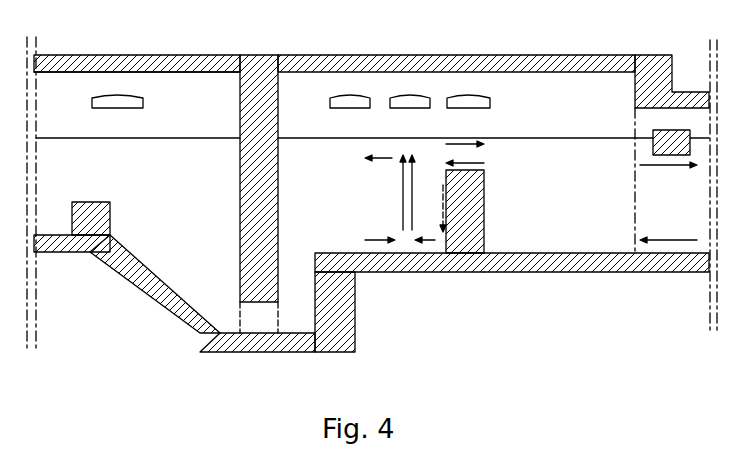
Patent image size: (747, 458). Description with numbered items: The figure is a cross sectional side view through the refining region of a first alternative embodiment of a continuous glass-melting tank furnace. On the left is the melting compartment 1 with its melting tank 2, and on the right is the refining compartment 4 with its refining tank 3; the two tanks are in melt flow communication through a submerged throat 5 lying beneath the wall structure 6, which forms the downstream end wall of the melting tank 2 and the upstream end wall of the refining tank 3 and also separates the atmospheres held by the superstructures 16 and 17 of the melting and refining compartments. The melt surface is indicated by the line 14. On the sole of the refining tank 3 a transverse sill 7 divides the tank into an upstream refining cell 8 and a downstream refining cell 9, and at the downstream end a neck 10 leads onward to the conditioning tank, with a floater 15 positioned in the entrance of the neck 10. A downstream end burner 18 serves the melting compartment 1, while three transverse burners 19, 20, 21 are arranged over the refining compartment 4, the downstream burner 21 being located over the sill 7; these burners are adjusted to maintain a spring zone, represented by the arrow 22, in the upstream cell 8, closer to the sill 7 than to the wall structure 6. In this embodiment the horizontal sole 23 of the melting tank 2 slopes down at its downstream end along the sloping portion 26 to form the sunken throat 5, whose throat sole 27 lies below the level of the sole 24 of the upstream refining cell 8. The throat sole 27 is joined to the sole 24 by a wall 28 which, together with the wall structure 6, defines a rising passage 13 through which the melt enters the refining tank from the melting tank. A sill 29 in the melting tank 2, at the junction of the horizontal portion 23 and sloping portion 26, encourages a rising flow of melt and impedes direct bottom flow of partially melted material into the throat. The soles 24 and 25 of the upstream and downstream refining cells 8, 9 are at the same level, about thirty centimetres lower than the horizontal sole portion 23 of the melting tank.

The melting compartment 1 is at (207, 52).
The melting tank 2 is at (76, 177).
The refining tank 3 is at (465, 153).
The refining compartment 4 is at (574, 55).
The submerged throat 5 is at (266, 327).
The wall structure 6 is at (240, 103).
The transverse sill 7 is at (485, 174).
The upstream refining cell 8 is at (356, 222).
The downstream refining cell 9 is at (560, 222).
The neck 10 is at (688, 222).
The rising passage 13 is at (308, 296).
The melt surface level 14 is at (118, 137).
The floater 15 is at (653, 145).
The superstructure of the melting compartment 16 is at (96, 57).
The superstructure of the refining compartment 17 is at (393, 58).
The downstream end burner 18 is at (106, 102).
The transverse burner 19 is at (348, 101).
The transverse burner 20 is at (408, 102).
The transverse burner 21 is at (467, 103).
The spring zone 22 is at (408, 193).
The sole of the melting tank 23 is at (75, 252).
The sole of the upstream refining cell 24 is at (383, 272).
The sole of the downstream refining cell 25 is at (585, 272).
The sloping portion of the sole 26 is at (158, 308).
The throat sole 27 is at (236, 351).
The wall 28 is at (355, 331).
The sill 29 is at (108, 203).